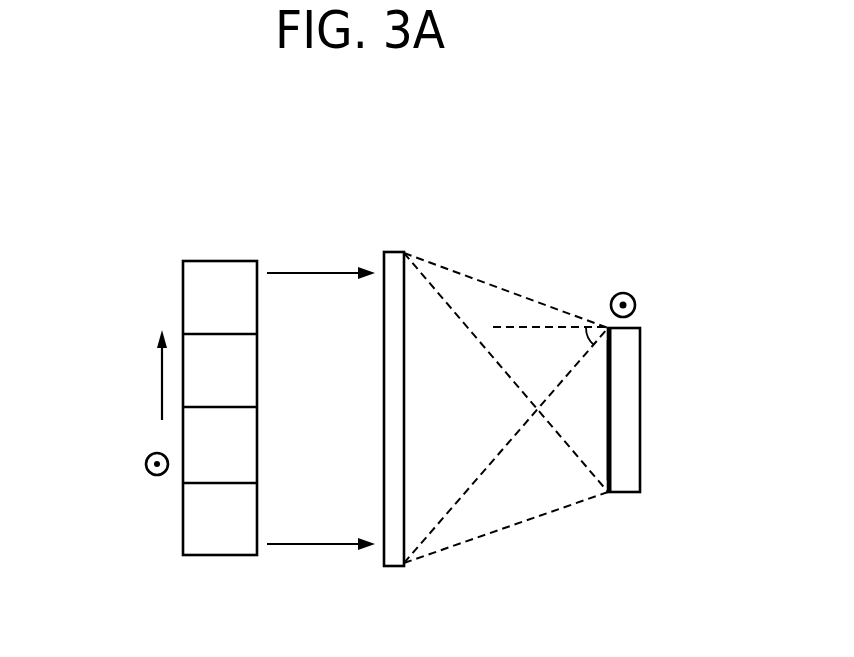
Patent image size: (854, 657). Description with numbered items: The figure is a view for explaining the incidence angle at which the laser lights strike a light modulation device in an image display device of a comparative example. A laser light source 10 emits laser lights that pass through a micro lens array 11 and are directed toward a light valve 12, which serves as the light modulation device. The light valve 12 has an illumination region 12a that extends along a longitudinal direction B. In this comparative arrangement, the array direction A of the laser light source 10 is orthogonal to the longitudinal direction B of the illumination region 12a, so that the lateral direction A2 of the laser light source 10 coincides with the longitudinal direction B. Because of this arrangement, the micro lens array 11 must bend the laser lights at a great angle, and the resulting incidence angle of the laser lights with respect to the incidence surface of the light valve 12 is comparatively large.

The laser light source 10 is at (200, 238).
The micro lens array 11 is at (394, 253).
The light valve 12 is at (625, 490).
The illumination region 12a is at (608, 452).
The array direction A is at (162, 389).
The lateral direction A2 is at (145, 464).
The longitudinal direction B is at (636, 305).